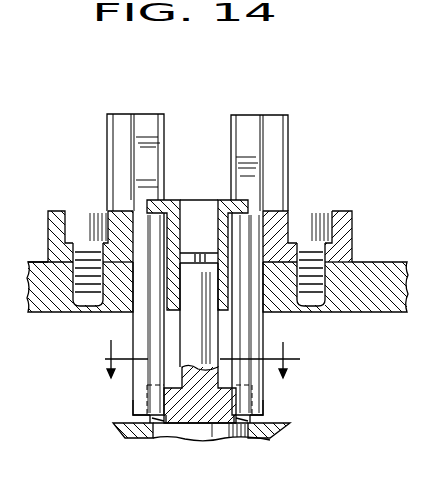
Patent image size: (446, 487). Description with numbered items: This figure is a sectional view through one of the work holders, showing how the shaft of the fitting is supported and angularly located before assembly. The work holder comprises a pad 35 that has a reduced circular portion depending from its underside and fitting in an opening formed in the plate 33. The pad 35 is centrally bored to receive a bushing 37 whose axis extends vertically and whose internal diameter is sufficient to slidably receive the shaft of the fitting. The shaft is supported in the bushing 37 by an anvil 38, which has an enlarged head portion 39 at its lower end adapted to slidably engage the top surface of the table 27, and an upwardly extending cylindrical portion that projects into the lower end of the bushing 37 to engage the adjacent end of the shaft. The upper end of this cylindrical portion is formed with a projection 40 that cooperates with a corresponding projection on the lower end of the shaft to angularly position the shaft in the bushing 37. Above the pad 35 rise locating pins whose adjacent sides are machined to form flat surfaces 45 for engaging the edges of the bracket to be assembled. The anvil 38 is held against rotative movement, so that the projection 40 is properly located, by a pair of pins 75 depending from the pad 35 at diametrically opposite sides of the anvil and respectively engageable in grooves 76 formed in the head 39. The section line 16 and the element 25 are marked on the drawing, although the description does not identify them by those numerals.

The section line 16- 16 is at (203, 359).
The right sleeve lower end 25 is at (266, 414).
The table 27 is at (286, 432).
The plate 33 is at (371, 303).
The pad 35 is at (350, 232).
The bushing 37 is at (178, 296).
The anvil 38 is at (219, 336).
The head portion 39 is at (198, 414).
The projection 40 is at (193, 252).
The flat surfaces 45 is at (152, 120).
The pins 75 is at (136, 408).
The grooves 76 is at (160, 422).